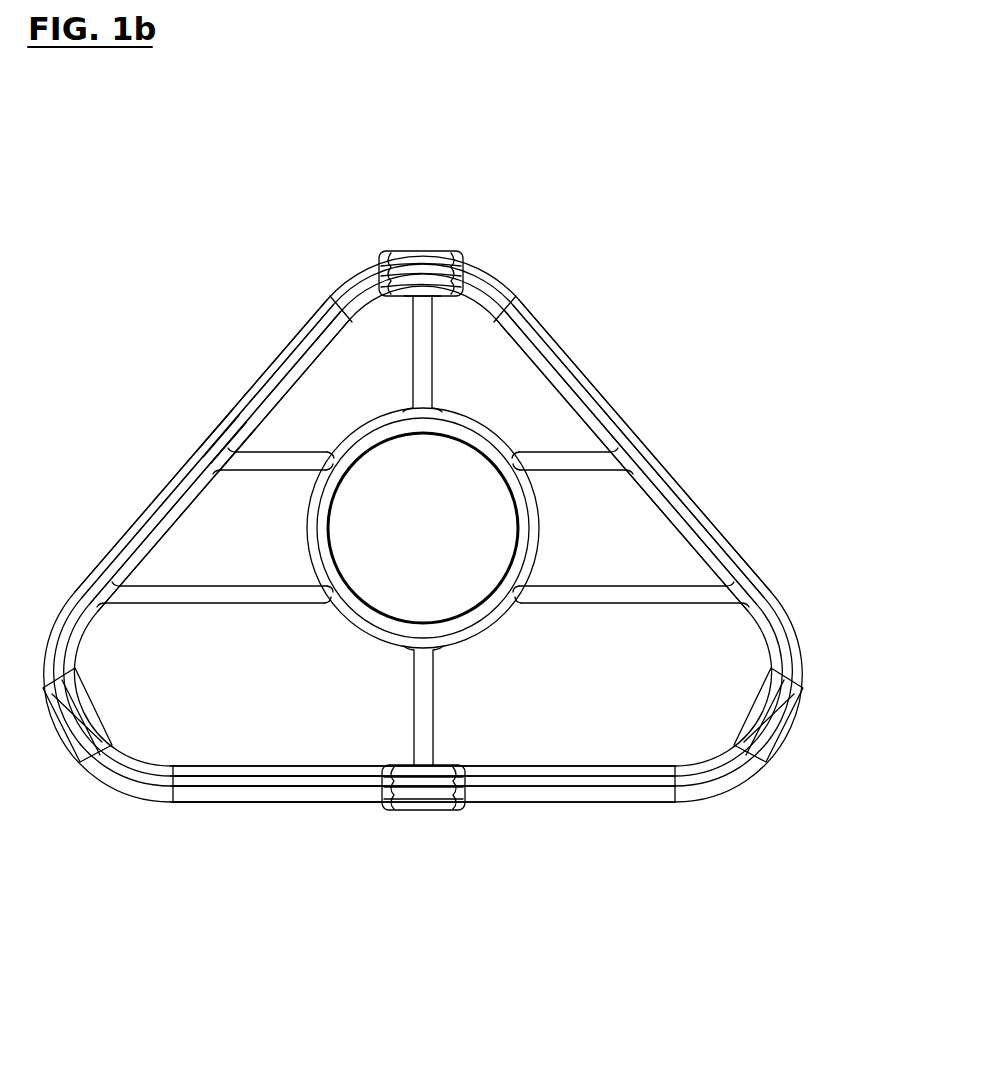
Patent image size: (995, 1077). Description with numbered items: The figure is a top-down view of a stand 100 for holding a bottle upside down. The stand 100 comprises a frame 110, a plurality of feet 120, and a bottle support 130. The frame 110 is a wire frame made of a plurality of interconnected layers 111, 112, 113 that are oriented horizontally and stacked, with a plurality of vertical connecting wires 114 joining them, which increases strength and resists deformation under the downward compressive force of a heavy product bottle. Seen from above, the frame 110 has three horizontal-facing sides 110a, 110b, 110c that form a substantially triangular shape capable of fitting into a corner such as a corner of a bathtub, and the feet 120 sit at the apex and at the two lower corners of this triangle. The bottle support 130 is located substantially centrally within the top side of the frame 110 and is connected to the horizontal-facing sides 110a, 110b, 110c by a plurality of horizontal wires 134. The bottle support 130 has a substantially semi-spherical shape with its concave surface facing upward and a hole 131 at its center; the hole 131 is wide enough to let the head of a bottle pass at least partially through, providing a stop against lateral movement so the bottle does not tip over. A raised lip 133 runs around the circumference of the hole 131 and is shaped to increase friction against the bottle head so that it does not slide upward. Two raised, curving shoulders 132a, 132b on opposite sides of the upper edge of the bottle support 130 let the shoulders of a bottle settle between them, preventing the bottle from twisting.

The stand 100 is at (408, 551).
The frame 110 is at (338, 255).
The horizontal-facing side 110a is at (110, 525).
The horizontal-facing side 110b is at (610, 388).
The horizontal-facing side 110c is at (495, 818).
The interconnected layer 111 is at (190, 777).
The interconnected layer 112 is at (247, 787).
The interconnected layer 113 is at (306, 802).
The vertical connecting wire 114 is at (210, 447).
The feet 120 is at (455, 247).
The bottle support 130 is at (485, 528).
The hole 131 is at (360, 528).
The raised curving shoulder 132a is at (428, 646).
The raised curving shoulder 132b is at (448, 412).
The raised lip 133 is at (480, 602).
The horizontal wire 134 is at (622, 603).